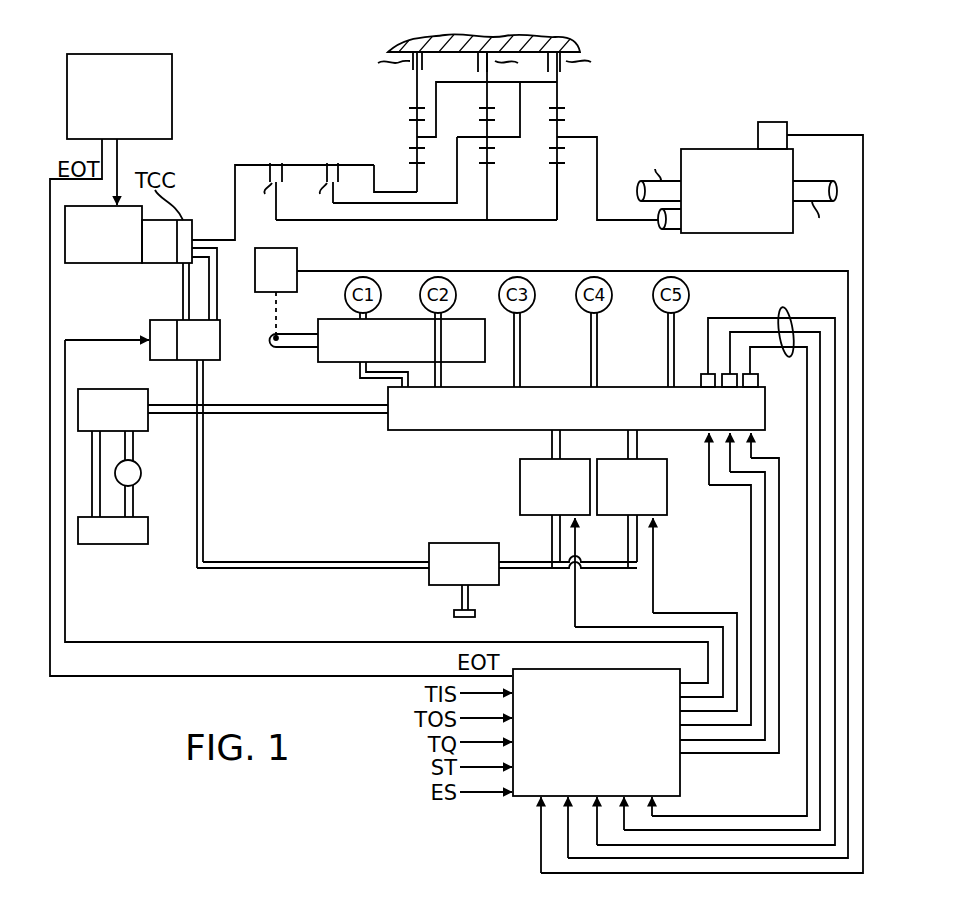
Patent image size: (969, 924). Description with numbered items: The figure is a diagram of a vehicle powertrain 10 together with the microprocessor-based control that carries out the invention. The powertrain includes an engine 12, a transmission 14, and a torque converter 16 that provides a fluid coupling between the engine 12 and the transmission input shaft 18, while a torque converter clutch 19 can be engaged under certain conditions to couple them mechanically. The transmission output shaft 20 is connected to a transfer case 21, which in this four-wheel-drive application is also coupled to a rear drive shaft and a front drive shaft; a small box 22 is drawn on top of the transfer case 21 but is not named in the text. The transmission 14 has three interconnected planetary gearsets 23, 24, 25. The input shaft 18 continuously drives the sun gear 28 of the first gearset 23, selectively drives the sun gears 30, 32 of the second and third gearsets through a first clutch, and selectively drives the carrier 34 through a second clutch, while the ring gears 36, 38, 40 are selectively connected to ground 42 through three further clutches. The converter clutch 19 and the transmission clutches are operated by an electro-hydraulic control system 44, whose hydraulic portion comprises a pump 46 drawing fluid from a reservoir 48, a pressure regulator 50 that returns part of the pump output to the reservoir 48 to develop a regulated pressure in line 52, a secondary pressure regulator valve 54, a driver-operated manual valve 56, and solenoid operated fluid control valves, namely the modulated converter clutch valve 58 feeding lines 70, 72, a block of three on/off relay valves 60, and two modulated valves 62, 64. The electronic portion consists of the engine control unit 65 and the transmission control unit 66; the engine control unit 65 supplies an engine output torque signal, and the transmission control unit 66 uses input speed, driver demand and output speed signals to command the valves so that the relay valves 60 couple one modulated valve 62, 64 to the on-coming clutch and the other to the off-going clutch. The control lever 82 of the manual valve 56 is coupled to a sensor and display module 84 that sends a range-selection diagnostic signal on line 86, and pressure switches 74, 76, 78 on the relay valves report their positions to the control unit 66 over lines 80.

The vehicle powertrain 10 is at (261, 109).
The engine 12 is at (95, 264).
The transmission 14 is at (379, 131).
The torque converter 16 is at (158, 264).
The transmission input shaft 18 is at (235, 173).
The torque converter clutch 19 is at (192, 231).
The transmission output shaft 20 is at (612, 220).
The transfer case 21 is at (722, 149).
The transfer case sensor 22 is at (787, 130).
The planetary gearset 23 is at (433, 144).
The planetary gearset 24 is at (501, 144).
The planetary gearset 25 is at (568, 126).
The sun gear 28 is at (417, 184).
The sun gear 30 is at (487, 212).
The sun gear 32 is at (558, 212).
The carrier 34 is at (465, 134).
The ring gear 36 is at (413, 88).
The ring gear 38 is at (478, 63).
The ring gear 40 is at (560, 70).
The ground 42 is at (583, 45).
The electro-hydraulic control system 44 is at (879, 311).
The pump 46 is at (142, 471).
The reservoir 48 is at (148, 532).
The pressure regulator 50 is at (118, 389).
The line 52 is at (290, 414).
The secondary pressure regulator valve 54 is at (429, 584).
The manual valve 56 is at (348, 363).
The fluid control valve 58 is at (221, 351).
The relay valves 60 is at (404, 431).
The modulated valve 62 is at (520, 504).
The modulated valve 64 is at (667, 504).
The engine control unit 65 is at (173, 97).
The transmission control unit 66 is at (524, 798).
The line 70 is at (181, 308).
The line 72 is at (220, 301).
The pressure switch 74 is at (706, 374).
The pressure switch 76 is at (737, 387).
The pressure switch 78 is at (758, 381).
The lines 80 is at (794, 322).
The control lever 82 is at (295, 348).
The sensor and display module 84 is at (297, 257).
The line 86 is at (727, 272).